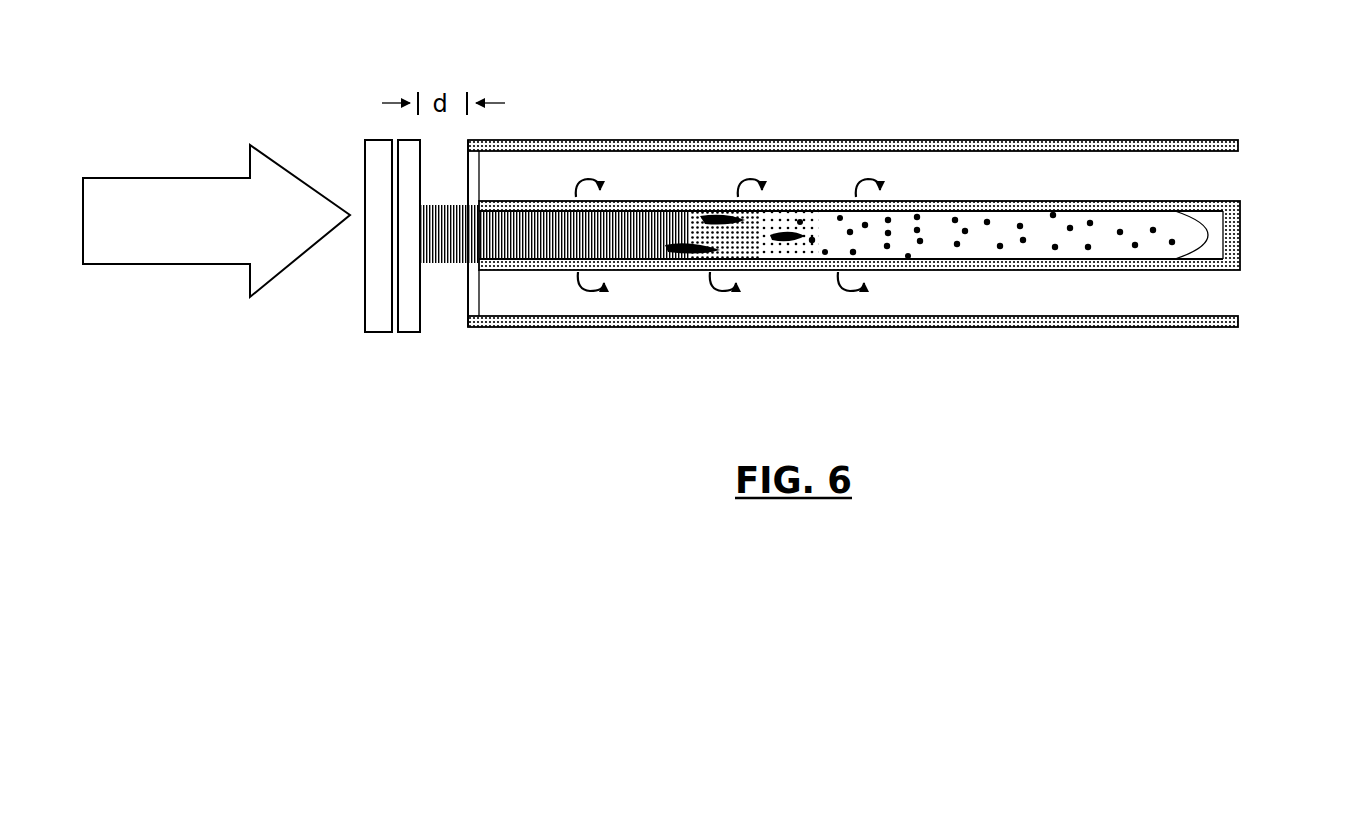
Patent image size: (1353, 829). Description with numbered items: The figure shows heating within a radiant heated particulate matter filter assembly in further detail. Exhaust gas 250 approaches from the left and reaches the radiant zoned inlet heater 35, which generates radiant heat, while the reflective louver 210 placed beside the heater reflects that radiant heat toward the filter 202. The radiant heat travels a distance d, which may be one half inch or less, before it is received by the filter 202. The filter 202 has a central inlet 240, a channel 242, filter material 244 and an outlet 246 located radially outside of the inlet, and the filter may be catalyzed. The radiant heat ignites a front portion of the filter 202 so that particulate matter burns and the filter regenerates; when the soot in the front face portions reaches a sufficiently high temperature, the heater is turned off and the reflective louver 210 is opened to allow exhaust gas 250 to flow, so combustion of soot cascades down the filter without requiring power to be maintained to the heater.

The exhaust gas 250 is at (192, 264).
The reflective louver 210 is at (378, 332).
The radiant zoned inlet heater 35 is at (402, 332).
The filter 202 is at (755, 140).
The filter material 244 is at (903, 204).
The channel 242 is at (945, 211).
The central inlet 240 is at (456, 265).
The outlet 246 is at (1248, 182).